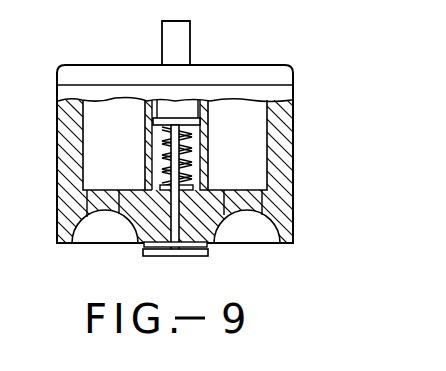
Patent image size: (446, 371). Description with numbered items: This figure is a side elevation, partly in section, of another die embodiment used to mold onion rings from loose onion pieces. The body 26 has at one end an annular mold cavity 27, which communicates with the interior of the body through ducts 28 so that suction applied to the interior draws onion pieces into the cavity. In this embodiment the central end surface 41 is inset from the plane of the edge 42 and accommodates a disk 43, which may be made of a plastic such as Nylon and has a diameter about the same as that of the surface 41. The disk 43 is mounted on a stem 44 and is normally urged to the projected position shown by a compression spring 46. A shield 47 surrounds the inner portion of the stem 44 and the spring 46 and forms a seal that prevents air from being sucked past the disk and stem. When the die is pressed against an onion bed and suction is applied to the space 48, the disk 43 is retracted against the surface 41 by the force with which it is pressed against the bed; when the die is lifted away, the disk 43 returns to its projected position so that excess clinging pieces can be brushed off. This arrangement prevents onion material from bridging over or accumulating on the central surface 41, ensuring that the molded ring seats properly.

The body 26 is at (293, 193).
The mold cavity 27 is at (255, 238).
The ducts 28 is at (120, 192).
The central end surface 41 is at (142, 245).
The edge 42 is at (62, 246).
The disk 43 is at (198, 257).
The stem 44 is at (177, 213).
The spring 46 is at (163, 143).
The shield 47 is at (208, 132).
The space 48 is at (255, 138).